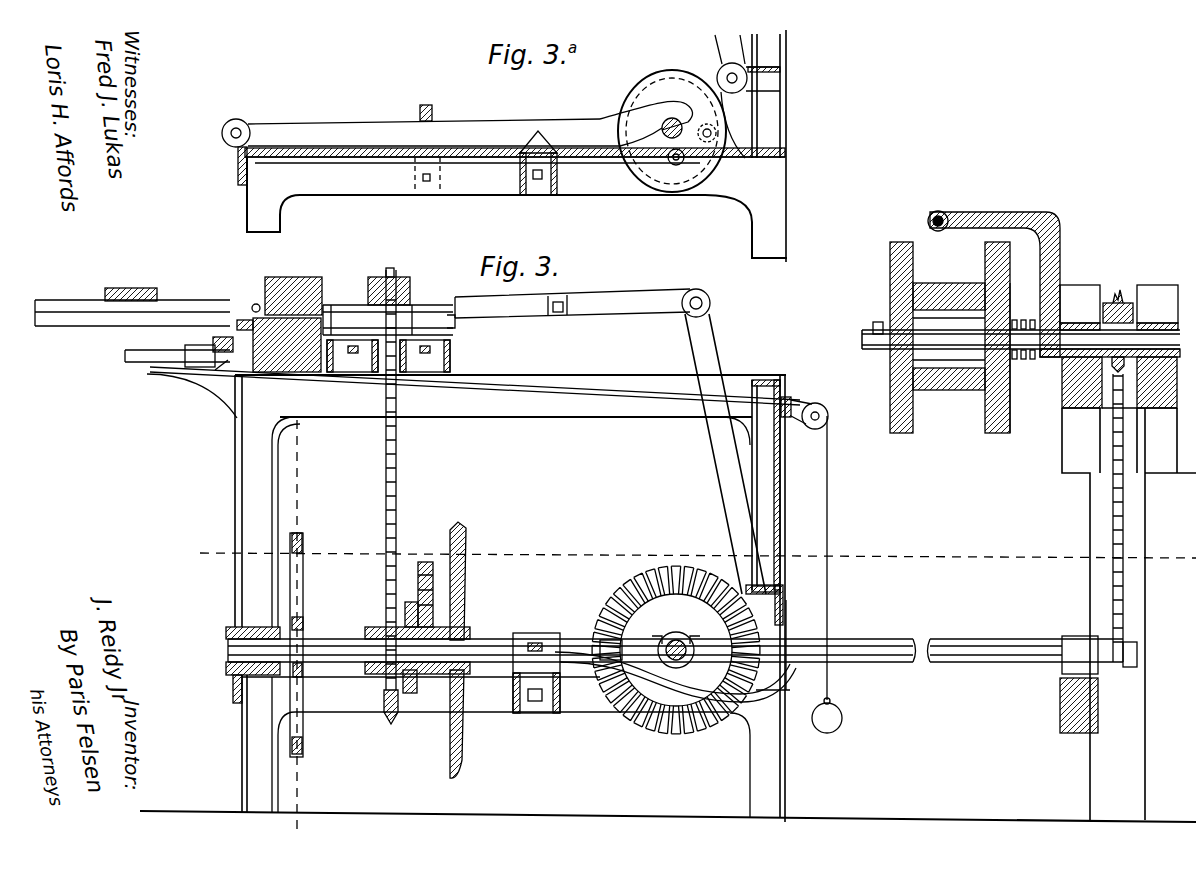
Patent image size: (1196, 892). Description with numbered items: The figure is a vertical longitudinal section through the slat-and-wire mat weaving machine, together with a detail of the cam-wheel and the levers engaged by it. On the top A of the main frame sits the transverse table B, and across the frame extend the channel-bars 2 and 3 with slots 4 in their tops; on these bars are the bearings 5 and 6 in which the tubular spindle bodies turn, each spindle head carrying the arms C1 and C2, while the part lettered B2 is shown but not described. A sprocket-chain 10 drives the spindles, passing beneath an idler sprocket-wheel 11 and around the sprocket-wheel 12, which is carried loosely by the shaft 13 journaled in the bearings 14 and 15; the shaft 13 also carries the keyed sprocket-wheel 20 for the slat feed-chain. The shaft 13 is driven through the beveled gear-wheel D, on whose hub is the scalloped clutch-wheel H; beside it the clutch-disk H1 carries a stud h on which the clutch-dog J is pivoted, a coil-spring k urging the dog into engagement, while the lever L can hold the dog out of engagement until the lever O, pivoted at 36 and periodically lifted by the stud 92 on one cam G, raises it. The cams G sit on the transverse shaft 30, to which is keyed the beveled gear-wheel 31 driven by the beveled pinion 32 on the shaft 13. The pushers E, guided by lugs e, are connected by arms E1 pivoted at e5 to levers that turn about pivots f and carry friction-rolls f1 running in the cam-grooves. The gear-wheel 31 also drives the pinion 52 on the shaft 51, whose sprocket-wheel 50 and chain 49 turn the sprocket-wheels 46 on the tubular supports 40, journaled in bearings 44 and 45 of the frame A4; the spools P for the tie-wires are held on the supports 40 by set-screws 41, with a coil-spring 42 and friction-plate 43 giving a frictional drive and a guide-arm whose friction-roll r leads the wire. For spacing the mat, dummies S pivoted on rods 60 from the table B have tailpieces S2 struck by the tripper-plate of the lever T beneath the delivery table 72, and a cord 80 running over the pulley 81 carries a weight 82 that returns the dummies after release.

In FIG. 3a, the lever O is at (475, 130).
In FIG. 3a, the pivot 36 is at (240, 125).
In FIG. 3a, the main frame A is at (470, 183).
In FIG. 3, the main frame A is at (244, 467).
In FIG. 3a, the frame post B2 is at (372, 205).
In FIG. 3a, the lever L is at (430, 102).
In FIG. 3, the lever L is at (425, 560).
In FIG. 3a, the pivot f is at (737, 78).
In FIG. 3, the pivot f is at (782, 592).
In FIG. 3a, the friction-rolls f1 is at (727, 145).
In FIG. 3a, the cams G is at (680, 183).
In FIG. 3a, the transverse shaft 30 is at (666, 135).
In FIG. 3, the transverse shaft 30 is at (677, 640).
In FIG. 3a, the stud 92 is at (674, 162).
In FIG. 3, the slots 4 is at (689, 554).
In FIG. 3, the bearing 5 is at (293, 262).
In FIG. 3, the cord 80 is at (552, 398).
In FIG. 3, the table 72 is at (60, 318).
In FIG. 3, the rods 60 is at (135, 362).
In FIG. 3, the tailpiece S2 is at (228, 345).
In FIG. 3, the dummies S is at (228, 355).
In FIG. 3, the arm C1 is at (237, 322).
In FIG. 3, the arm C2 is at (253, 305).
In FIG. 3, the transverse table B is at (305, 372).
In FIG. 3, the idler sprocket-wheel 11 is at (396, 277).
In FIG. 3, the bearing 6 is at (425, 305).
In FIG. 3, the lugs or bearings e is at (450, 318).
In FIG. 3, the channel-bar 2 is at (370, 378).
In FIG. 3, the channel-bar 3 is at (452, 358).
In FIG. 3, the pushers E is at (495, 305).
In FIG. 3, the arm E1 is at (575, 300).
In FIG. 3, the pivot e5 is at (710, 300).
In FIG. 3, the tripper-lever T is at (708, 468).
In FIG. 3, the pulley 81 is at (812, 429).
In FIG. 3, the weight 82 is at (828, 505).
In FIG. 3, the sprocket-chain 10 is at (398, 465).
In FIG. 3, the sprocket-wheel 12 is at (386, 718).
In FIG. 3, the shaft 13 is at (335, 640).
In FIG. 3, the bearing 15 is at (235, 630).
In FIG. 3, the sprocket-wheel 20 is at (302, 546).
In FIG. 3, the clutch-dog J is at (435, 592).
In FIG. 3, the stud h is at (440, 616).
In FIG. 3, the coil-spring k is at (1000, 212).
In FIG. 3, the beveled gear-wheel D is at (466, 540).
In FIG. 3, the clutch-disk H1 is at (410, 695).
In FIG. 3, the clutch-wheel H is at (455, 715).
In FIG. 3, the bearing 14 is at (525, 632).
In FIG. 3, the beveled gear-wheel 31 is at (662, 730).
In FIG. 3, the beveled pinion 32 is at (612, 665).
In FIG. 3, the beveled gear-pinion 52 is at (737, 700).
In FIG. 3, the tubular support 40 is at (862, 340).
In FIG. 3, the set-screws 41 is at (877, 322).
In FIG. 3, the spools P is at (992, 410).
In FIG. 3, the friction-plate 43 is at (1012, 400).
In FIG. 3, the coil-spring 42 is at (1024, 359).
In FIG. 3, the friction-roll r is at (942, 212).
In FIG. 3, the bearing 45 is at (1076, 318).
In FIG. 3, the bearing 44 is at (1150, 318).
In FIG. 3, the sprocket-wheel 46 is at (1119, 298).
In FIG. 3, the sprocket-chain 49 is at (1108, 583).
In FIG. 3, the frame A4 is at (1126, 614).
In FIG. 3, the shaft 51 is at (1052, 639).
In FIG. 3, the sprocket-wheel 50 is at (1137, 652).